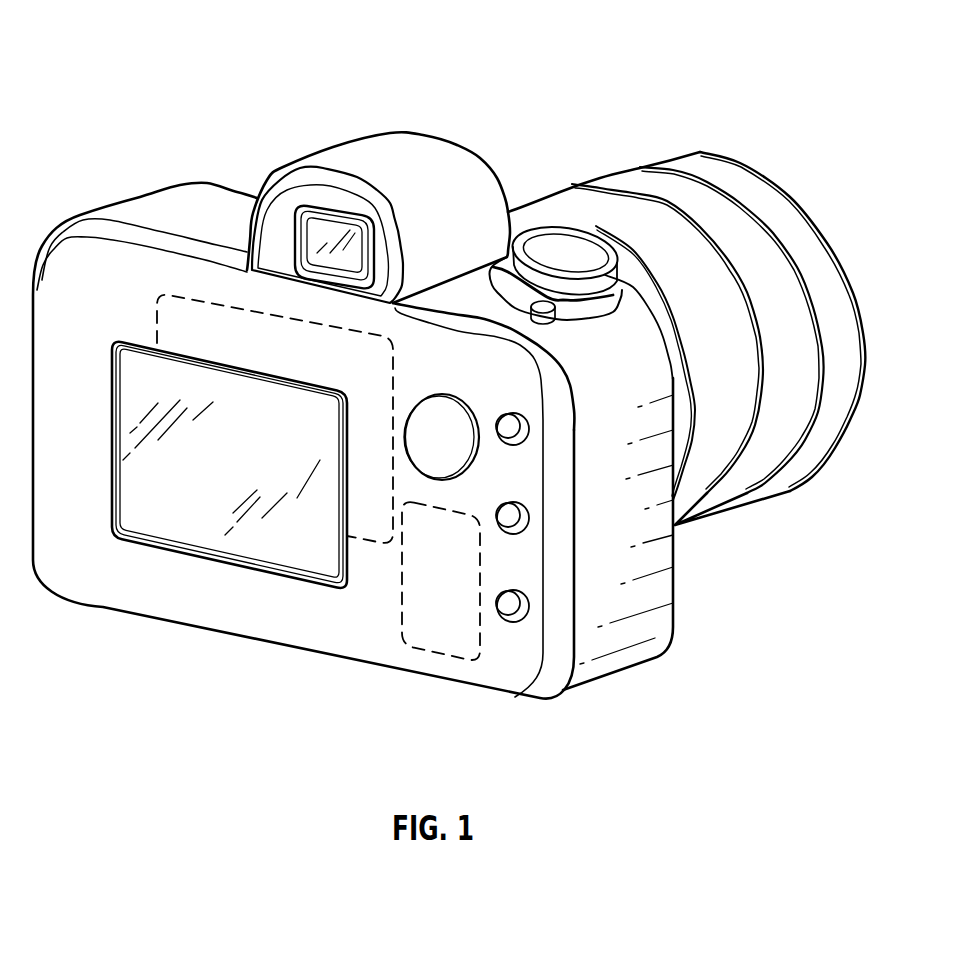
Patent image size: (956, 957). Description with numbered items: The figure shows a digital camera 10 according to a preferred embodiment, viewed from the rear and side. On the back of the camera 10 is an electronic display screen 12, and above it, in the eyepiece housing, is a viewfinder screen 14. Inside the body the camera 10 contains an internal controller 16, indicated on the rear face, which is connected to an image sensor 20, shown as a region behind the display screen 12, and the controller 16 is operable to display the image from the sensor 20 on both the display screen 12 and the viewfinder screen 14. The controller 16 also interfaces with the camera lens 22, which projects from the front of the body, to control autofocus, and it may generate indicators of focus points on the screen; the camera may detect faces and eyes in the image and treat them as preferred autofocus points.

The digital camera 10 is at (162, 27).
The electronic display screen 12 is at (232, 550).
The viewfinder screen 14 is at (318, 258).
The internal controller 16 is at (437, 660).
The image sensor 20 is at (157, 313).
The camera lens 22 is at (652, 160).